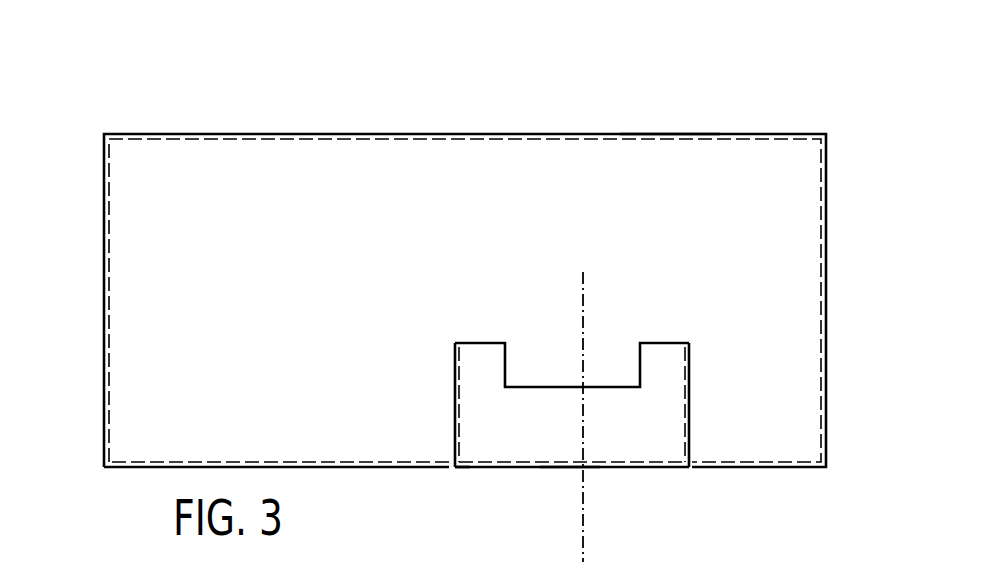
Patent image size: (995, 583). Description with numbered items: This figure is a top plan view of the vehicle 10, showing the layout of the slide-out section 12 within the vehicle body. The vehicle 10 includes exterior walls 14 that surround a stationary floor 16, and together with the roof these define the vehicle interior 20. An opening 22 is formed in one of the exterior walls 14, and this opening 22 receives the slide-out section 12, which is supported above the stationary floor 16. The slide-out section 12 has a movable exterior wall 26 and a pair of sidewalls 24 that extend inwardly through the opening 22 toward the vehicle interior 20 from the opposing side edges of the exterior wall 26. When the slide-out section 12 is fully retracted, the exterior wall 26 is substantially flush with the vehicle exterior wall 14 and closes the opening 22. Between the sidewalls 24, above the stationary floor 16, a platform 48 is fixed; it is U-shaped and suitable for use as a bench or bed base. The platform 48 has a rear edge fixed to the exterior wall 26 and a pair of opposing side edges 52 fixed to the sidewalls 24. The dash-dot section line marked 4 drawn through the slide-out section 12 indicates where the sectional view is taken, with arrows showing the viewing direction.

The vehicle 10 is at (450, 88).
The slide-out section 12 is at (635, 496).
The exterior walls 14 is at (362, 133).
The stationary floor 16 is at (658, 158).
The vehicle interior 20 is at (530, 227).
The opening 22 is at (453, 470).
The sidewalls 24 is at (455, 400).
The exterior wall of slide-out section 26 is at (560, 470).
The platform 48 is at (593, 403).
The side edges 52 is at (458, 412).
The section line 4- 4 is at (572, 283).